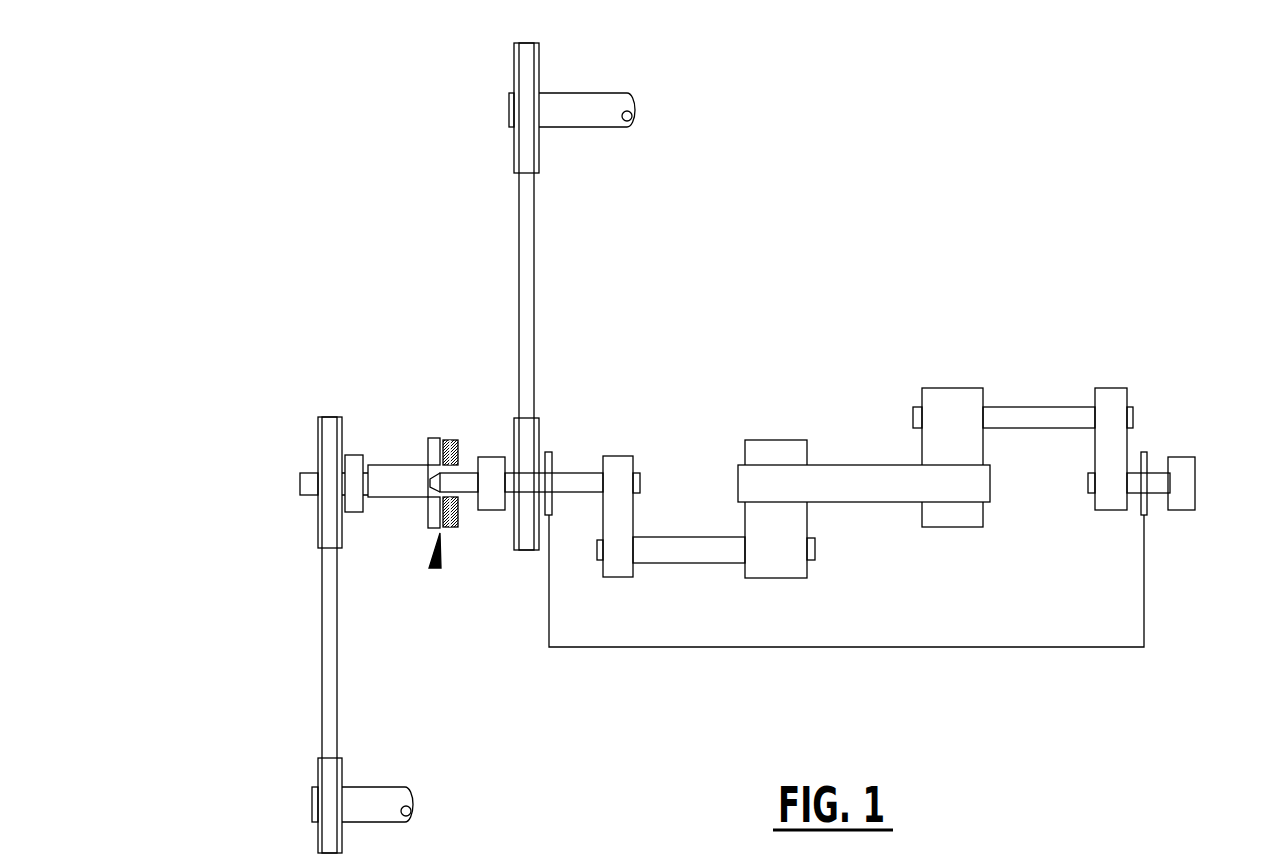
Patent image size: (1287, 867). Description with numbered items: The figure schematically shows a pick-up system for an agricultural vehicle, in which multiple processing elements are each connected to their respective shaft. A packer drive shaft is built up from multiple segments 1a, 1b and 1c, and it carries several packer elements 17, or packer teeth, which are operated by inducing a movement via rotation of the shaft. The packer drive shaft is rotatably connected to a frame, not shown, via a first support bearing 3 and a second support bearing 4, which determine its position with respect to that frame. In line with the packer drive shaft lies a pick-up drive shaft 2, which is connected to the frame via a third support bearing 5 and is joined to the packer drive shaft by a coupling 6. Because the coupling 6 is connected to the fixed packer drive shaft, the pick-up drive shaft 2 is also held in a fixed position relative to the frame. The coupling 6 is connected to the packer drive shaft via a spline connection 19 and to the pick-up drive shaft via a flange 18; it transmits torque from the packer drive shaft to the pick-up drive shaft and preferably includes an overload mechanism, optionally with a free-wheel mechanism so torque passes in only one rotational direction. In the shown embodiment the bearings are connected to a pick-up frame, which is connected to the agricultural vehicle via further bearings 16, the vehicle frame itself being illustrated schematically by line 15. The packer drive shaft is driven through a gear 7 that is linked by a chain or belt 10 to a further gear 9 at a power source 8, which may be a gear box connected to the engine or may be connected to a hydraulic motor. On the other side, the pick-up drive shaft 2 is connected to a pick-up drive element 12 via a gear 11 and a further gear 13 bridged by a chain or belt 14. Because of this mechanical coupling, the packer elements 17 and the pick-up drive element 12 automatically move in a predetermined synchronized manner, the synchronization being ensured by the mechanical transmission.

The packer drive shaft segment 1a is at (588, 485).
The packer drive shaft segment 1b is at (838, 472).
The packer drive shaft segment 1c is at (1152, 482).
The pick-up drive shaft 2 is at (390, 467).
The first support bearing 3 is at (1178, 484).
The second support bearing 4 is at (493, 455).
The third support bearing 5 is at (353, 512).
The coupling 6 is at (434, 568).
The gear 7 is at (538, 426).
The power source 8 is at (578, 115).
The further gear 9 is at (518, 158).
The chain or belt 10 is at (527, 262).
The gear 11 is at (322, 517).
The pick-up drive element 12 is at (372, 792).
The further gear 13 is at (323, 778).
The chain or belt 14 is at (328, 697).
The line 15 is at (815, 648).
The further bearings 16 is at (553, 505).
The packer elements 17 is at (670, 545).
The flange 18 is at (428, 457).
The spline connection 19 is at (463, 493).